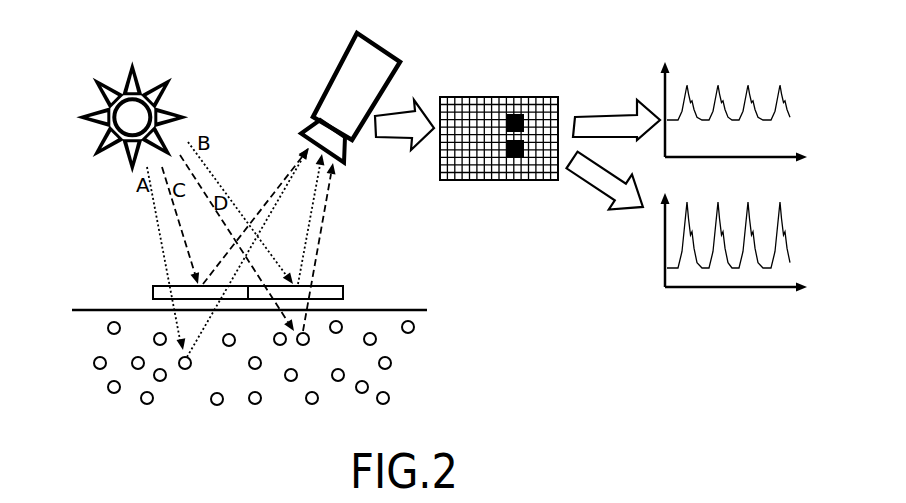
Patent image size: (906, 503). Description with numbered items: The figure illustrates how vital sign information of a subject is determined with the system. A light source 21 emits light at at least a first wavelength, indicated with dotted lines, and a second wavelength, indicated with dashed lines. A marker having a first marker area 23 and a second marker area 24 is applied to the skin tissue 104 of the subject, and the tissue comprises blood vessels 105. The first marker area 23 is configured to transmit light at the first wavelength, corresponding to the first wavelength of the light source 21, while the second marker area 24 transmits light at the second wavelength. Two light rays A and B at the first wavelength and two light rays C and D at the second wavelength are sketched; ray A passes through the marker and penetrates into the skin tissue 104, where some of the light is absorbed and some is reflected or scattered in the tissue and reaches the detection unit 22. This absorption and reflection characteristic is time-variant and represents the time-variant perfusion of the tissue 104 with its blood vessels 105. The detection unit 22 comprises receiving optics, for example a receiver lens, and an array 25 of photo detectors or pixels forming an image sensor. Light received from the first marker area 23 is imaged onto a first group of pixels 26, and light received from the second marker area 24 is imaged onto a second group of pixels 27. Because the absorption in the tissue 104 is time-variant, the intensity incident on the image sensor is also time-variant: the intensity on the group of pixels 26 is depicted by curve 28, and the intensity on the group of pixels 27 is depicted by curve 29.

The light source 21 is at (96, 78).
The detection unit 22 is at (387, 43).
The first marker area 23 is at (163, 286).
The second marker area 24 is at (340, 286).
The array of photo detectors or pixels 25 is at (449, 97).
The first group of pixels 26 is at (518, 114).
The second group of pixels 27 is at (517, 158).
The curve 28 is at (718, 87).
The curve 29 is at (718, 205).
The skin tissue 104 is at (88, 310).
The blood vessels 105 is at (100, 363).